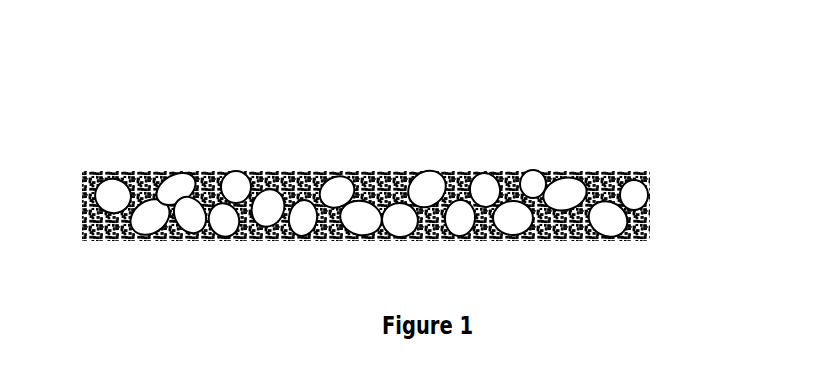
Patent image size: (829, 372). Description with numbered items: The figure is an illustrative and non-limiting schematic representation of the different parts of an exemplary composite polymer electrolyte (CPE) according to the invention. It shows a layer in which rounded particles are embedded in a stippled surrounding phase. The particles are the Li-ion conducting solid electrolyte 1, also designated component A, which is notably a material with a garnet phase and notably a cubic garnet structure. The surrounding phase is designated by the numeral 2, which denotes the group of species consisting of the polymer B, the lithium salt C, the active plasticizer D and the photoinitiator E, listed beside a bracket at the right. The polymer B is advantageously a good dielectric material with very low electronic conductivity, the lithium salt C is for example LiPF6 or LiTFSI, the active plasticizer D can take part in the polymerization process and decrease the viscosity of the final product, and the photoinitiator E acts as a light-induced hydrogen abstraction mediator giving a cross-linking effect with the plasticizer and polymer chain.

The Li-ion conducting solid electrolyte 1 is at (113, 198).
The Li-ion conducting solid electrolyte A is at (112, 196).
The group of species 2 is at (713, 10).
The polymer B is at (718, 23).
The lithium salt C is at (718, 88).
The active plasticizer D is at (718, 153).
The photoinitiator E is at (718, 217).